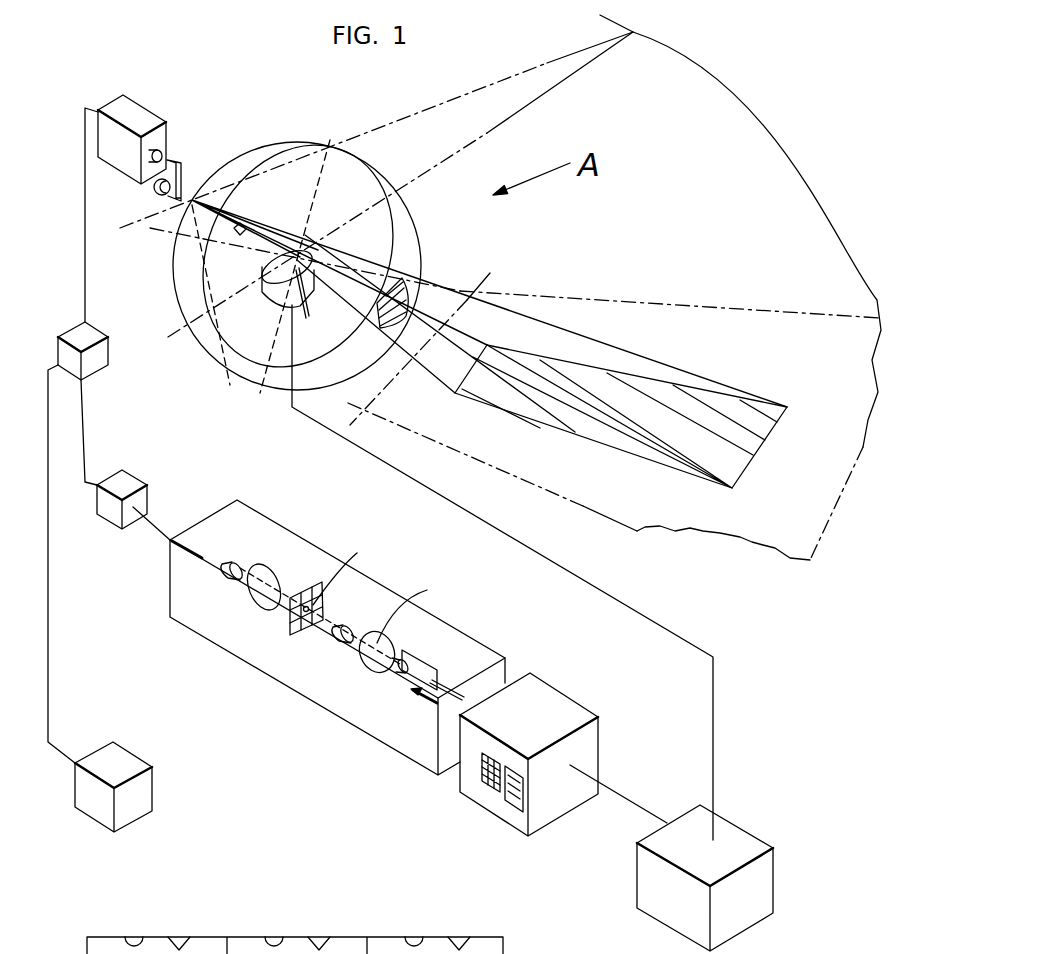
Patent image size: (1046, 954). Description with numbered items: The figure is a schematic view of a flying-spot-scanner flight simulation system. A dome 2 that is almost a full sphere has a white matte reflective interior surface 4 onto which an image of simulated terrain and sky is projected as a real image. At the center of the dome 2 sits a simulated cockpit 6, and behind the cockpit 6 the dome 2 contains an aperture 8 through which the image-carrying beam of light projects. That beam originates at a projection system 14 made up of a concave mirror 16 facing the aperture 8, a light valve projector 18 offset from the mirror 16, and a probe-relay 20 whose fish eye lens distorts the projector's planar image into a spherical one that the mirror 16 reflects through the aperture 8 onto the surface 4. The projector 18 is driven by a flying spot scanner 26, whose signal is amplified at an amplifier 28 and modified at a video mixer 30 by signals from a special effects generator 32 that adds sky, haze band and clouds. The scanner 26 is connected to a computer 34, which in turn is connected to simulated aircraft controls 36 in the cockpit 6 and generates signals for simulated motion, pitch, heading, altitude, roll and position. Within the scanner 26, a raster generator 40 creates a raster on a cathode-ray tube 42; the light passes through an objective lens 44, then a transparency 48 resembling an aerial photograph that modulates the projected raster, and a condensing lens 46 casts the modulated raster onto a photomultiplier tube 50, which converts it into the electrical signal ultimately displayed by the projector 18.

The dome 2 is at (283, 143).
The reflective interior surface 4 is at (403, 230).
The simulated cockpit 6 is at (275, 288).
The aperture 8 is at (190, 204).
The projection system 14 is at (188, 132).
The concave mirror 16 is at (158, 196).
The light valve projector 18 is at (128, 108).
The probe-relay 20 is at (180, 172).
The flying spot scanner 26 is at (332, 667).
The amplifier 28 is at (110, 507).
The video mixer 30 is at (98, 360).
The special effects generator 32 is at (137, 795).
The computer 34 is at (737, 837).
The simulated aircraft controls 36 is at (315, 303).
The raster generator 40 is at (537, 712).
The cathode-ray tube 42 is at (373, 665).
The objective lens 44 is at (338, 640).
The condensing lens 46 is at (255, 603).
The transparency 48 is at (293, 625).
The photomultiplier tube 50 is at (217, 572).